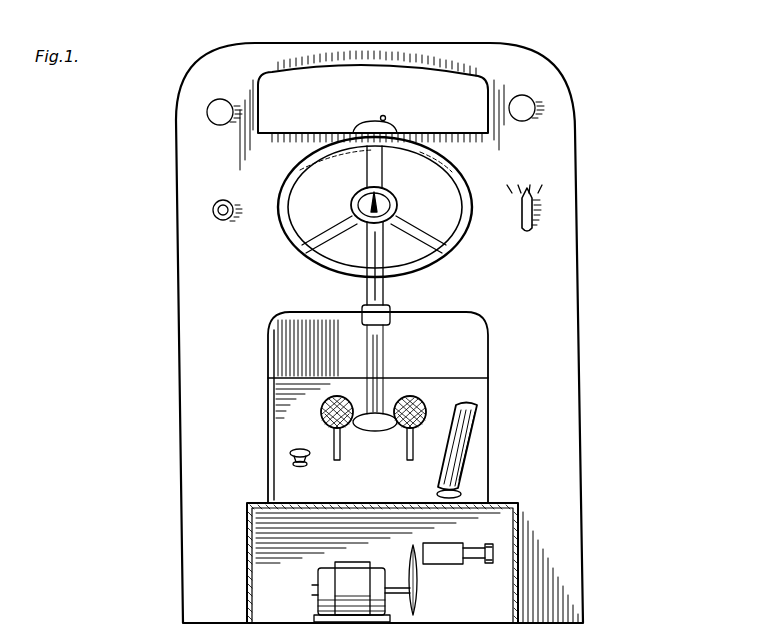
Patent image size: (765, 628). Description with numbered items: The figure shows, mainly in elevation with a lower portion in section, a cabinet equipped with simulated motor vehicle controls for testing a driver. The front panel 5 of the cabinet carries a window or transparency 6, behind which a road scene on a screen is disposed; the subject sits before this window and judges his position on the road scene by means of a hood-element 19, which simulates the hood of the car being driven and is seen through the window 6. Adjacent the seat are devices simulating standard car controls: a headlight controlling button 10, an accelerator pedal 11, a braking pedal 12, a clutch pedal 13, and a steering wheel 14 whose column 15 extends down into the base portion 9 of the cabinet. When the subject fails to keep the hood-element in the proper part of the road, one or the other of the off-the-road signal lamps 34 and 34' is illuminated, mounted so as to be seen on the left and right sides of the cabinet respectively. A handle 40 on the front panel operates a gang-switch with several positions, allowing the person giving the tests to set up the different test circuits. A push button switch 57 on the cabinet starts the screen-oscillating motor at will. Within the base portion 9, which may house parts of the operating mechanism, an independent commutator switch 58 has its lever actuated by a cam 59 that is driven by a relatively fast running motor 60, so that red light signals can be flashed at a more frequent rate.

The front panel 5 is at (584, 296).
The window or transparency 6 is at (428, 80).
The base portion 9 is at (505, 504).
The headlight controlling button 10 is at (290, 455).
The accelerator pedal 11 is at (473, 438).
The braking pedal 12 is at (416, 398).
The clutch pedal 13 is at (321, 414).
The steering wheel 14 is at (462, 234).
The column 15 is at (386, 296).
The hood-element 19 is at (392, 123).
The off-the-road signal lamp 34 is at (186, 112).
The off-the-road signal lamp 34' is at (559, 107).
The handle 40 is at (535, 216).
The push button switch 57 is at (212, 210).
The commutator switch 58 is at (446, 547).
The cam 59 is at (418, 604).
The motor 60 is at (320, 582).